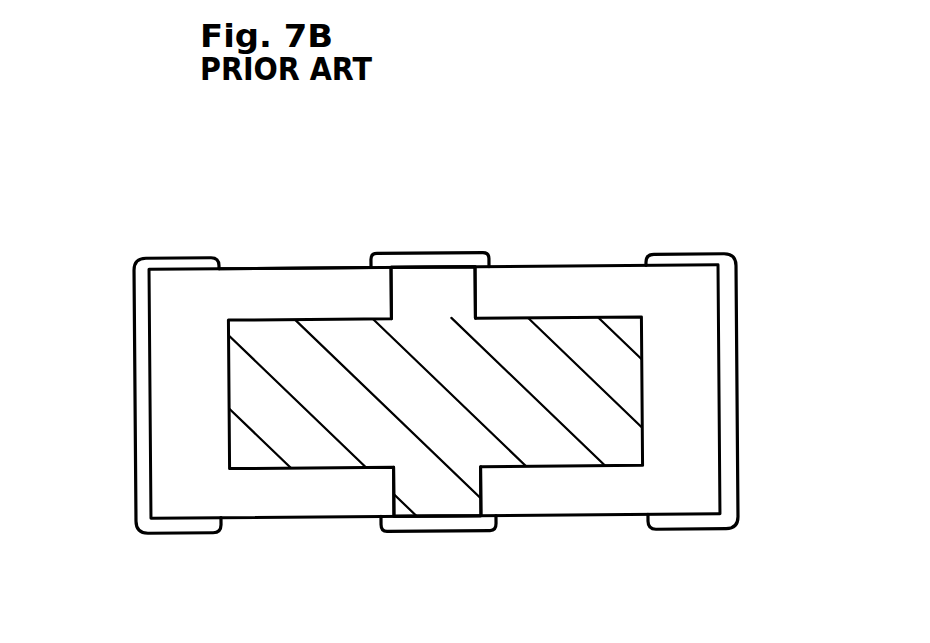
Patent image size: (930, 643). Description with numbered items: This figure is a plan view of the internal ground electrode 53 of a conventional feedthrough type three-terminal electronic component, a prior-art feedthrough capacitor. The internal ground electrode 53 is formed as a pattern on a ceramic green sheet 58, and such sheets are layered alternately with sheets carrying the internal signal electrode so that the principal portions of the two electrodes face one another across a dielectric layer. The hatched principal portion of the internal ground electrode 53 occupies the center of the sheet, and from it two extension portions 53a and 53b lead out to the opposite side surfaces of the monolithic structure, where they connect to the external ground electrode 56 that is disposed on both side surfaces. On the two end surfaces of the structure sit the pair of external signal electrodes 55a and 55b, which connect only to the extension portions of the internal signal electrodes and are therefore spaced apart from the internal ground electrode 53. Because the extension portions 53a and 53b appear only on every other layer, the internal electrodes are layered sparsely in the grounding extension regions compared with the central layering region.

The internal ground electrode 53 is at (258, 318).
The extension portion 53a is at (476, 293).
The extension portion 53b is at (393, 487).
The external signal electrode 55a is at (136, 323).
The external signal electrode 55b is at (737, 353).
The external ground electrode 56 is at (432, 253).
The ceramic green sheet 58 is at (318, 268).